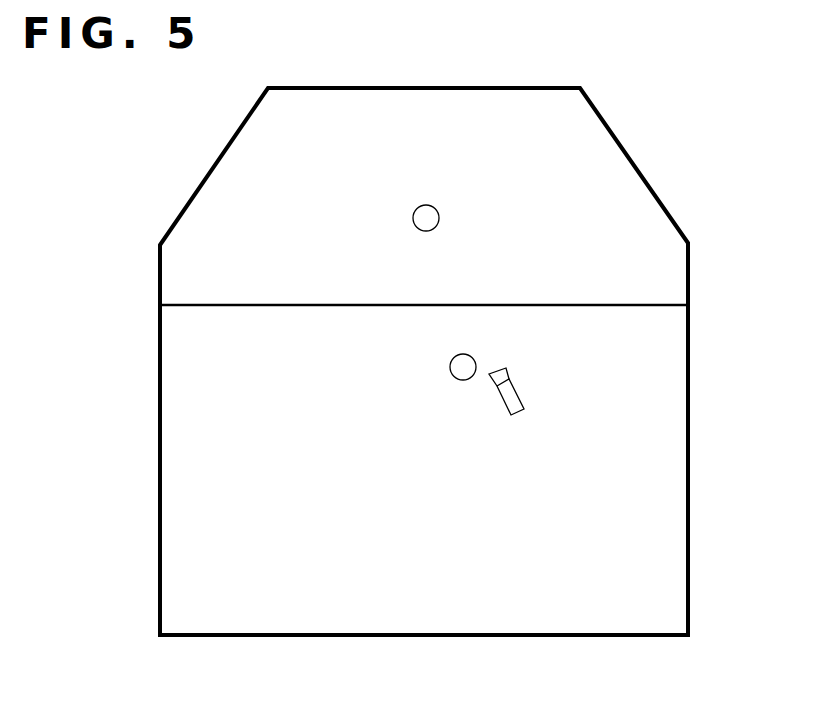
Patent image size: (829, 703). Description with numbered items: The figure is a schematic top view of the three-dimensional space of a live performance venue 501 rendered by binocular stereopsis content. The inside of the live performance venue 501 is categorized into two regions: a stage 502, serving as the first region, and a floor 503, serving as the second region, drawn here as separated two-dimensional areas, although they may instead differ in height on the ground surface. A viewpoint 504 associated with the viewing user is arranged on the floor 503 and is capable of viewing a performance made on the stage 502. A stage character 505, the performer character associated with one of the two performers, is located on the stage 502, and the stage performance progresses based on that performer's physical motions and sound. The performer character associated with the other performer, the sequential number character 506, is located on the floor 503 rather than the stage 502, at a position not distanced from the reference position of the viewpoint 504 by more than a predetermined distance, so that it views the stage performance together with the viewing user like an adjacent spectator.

The live performance venue 501 is at (211, 172).
The stage 502 is at (709, 88).
The floor 503 is at (709, 307).
The viewpoint 504 is at (503, 412).
The stage character 505 is at (428, 205).
The sequential number character 506 is at (455, 379).